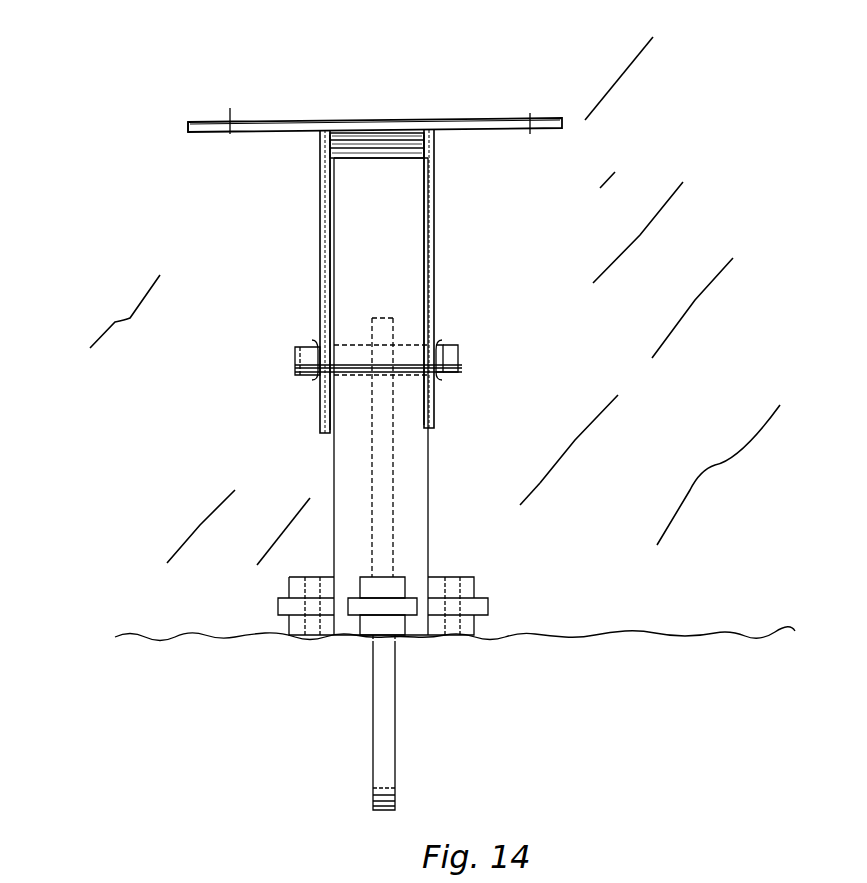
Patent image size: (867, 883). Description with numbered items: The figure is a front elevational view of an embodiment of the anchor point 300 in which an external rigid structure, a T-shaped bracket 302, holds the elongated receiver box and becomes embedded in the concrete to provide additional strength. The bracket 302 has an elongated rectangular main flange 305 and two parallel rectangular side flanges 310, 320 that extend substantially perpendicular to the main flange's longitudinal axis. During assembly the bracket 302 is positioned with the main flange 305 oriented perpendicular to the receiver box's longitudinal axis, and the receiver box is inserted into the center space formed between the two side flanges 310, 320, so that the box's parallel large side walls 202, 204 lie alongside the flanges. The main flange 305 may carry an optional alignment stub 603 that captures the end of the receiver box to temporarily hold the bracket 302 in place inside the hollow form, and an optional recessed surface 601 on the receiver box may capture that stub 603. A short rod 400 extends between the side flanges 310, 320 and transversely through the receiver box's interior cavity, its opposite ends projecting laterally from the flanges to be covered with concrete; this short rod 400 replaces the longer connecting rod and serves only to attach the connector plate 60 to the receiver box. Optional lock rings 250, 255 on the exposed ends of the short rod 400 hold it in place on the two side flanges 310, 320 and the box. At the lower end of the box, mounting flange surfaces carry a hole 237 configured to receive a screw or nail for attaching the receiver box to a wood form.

The anchor point 300 is at (162, 179).
The T-shaped bracket 302 is at (567, 132).
The main flange 305 is at (190, 131).
The side flange 310 is at (318, 250).
The side flange 320 is at (436, 267).
The large side wall 202 is at (330, 204).
The large side wall 204 is at (425, 200).
The recessed surface 601 is at (405, 137).
The alignment stub 603 is at (355, 133).
The short rod 400 is at (455, 345).
The lock ring 250 is at (320, 383).
The lock ring 255 is at (440, 378).
The hole 237 is at (395, 577).
The connector plate 60 is at (382, 687).